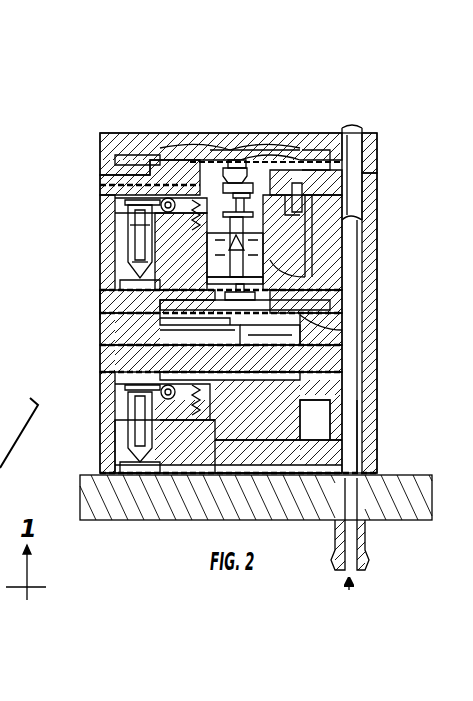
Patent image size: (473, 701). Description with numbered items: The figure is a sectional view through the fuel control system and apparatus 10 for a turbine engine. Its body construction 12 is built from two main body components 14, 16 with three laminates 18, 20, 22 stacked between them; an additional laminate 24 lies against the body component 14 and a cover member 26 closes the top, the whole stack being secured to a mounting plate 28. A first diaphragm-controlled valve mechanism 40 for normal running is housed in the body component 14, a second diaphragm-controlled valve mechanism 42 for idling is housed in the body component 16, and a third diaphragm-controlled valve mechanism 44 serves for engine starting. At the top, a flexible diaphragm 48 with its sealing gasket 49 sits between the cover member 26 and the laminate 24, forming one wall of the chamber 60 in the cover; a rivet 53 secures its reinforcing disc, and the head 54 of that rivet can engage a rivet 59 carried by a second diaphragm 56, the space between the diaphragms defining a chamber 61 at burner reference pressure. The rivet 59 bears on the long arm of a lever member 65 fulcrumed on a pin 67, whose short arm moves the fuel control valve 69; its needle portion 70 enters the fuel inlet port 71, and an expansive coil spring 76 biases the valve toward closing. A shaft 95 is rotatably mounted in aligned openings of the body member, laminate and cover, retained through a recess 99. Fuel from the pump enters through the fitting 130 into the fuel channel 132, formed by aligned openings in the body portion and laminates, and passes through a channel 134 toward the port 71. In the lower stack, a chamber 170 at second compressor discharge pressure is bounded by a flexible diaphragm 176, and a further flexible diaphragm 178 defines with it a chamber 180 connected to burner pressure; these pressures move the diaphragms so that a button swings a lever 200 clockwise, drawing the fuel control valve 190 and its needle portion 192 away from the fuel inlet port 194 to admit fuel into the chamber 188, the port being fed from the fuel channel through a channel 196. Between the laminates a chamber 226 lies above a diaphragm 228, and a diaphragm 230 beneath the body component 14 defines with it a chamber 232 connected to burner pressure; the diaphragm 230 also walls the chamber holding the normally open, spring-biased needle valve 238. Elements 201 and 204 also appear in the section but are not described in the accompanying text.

The fuel control system and apparatus 10 is at (384, 128).
The body construction 12 is at (90, 210).
The main body component 14 is at (378, 190).
The main body component 16 is at (378, 387).
The laminate 18 is at (378, 298).
The laminate 20 is at (100, 350).
The laminate 22 is at (378, 360).
The laminate 24 is at (378, 170).
The cover member 26 is at (378, 140).
The mounting plate 28 is at (407, 521).
The diaphragm-controlled valve mechanism 40 is at (135, 205).
The second diaphragm-controlled valve mechanism 42 is at (92, 392).
The third diaphragm-controlled valve mechanism 44 is at (362, 230).
The flexible diaphragm 48 is at (342, 104).
The sealing gasket 49 is at (120, 155).
The rivet 53 is at (250, 170).
The head 54 is at (277, 140).
The diaphragm 56 is at (262, 185).
The rivet 59 is at (270, 175).
The chamber 60 is at (225, 168).
The chamber 61 is at (212, 175).
The lever member 65 is at (300, 215).
The pin 67 is at (165, 200).
The fuel control valve 69 is at (130, 240).
The needle portion 70 is at (128, 255).
The fuel inlet port 71 is at (160, 218).
The expansive coil spring 76 is at (92, 212).
The shaft 95 is at (350, 130).
The recess 99 is at (305, 277).
The fitting 130 is at (366, 540).
The fuel channel 132 is at (378, 436).
The channel 134 is at (362, 300).
The chamber 170 is at (378, 325).
The flexible diaphragm 176 is at (378, 333).
The flexible diaphragm 178 is at (160, 388).
The chamber 180 is at (170, 372).
The chamber 188 is at (378, 410).
The fuel control valve 190 is at (128, 420).
The needle portion 192 is at (128, 450).
The fuel inlet port 194 is at (130, 468).
The channel 196 is at (378, 462).
The lever 200 is at (210, 480).
The passage 201 is at (200, 470).
The passage 204 is at (180, 430).
The chamber 226 is at (175, 335).
The diaphragm 228 is at (150, 318).
The diaphragm 230 is at (300, 300).
The chamber 232 is at (200, 300).
The needle valve 238 is at (272, 245).